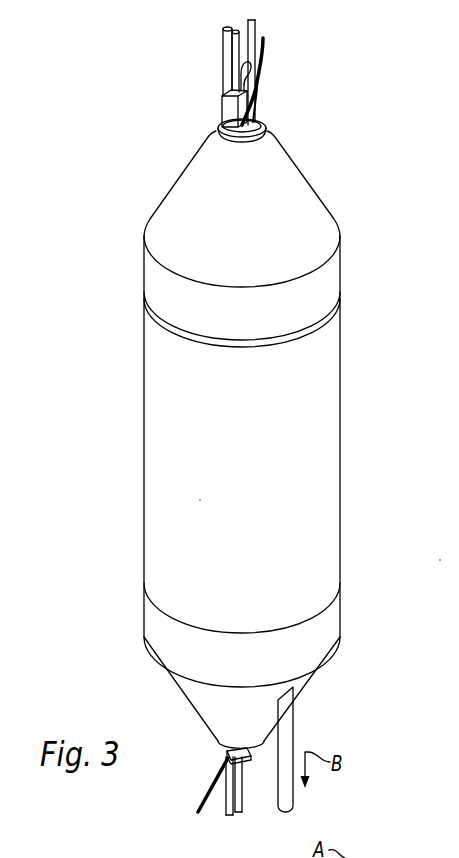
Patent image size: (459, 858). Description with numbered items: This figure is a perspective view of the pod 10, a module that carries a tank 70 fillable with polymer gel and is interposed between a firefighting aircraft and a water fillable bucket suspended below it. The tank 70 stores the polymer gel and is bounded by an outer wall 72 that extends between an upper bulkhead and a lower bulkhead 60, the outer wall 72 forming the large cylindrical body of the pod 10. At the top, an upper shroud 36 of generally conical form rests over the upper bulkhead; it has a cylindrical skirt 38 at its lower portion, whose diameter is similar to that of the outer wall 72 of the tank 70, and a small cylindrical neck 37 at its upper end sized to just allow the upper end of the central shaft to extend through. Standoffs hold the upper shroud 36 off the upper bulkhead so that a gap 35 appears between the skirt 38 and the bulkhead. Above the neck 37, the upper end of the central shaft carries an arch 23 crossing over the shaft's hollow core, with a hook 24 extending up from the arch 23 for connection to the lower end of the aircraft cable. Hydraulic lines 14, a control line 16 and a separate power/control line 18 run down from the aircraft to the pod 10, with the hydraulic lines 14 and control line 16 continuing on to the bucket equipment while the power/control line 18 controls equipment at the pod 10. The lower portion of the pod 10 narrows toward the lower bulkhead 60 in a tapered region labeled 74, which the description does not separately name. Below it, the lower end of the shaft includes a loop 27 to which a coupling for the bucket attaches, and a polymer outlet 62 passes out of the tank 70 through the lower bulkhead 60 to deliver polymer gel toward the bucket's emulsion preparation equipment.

The pod 10 is at (104, 398).
The hydraulic lines 14 is at (228, 30).
The control line 16 is at (264, 66).
The power/control line 18 is at (262, 37).
The arch 23 is at (226, 108).
The hook 24 is at (234, 64).
The loop 27 is at (224, 751).
The gap 35 is at (307, 330).
The upper shroud 36 is at (260, 233).
The cylindrical neck 37 is at (263, 129).
The cylindrical skirt 38 is at (325, 273).
The lower bulkhead 60 is at (449, 548).
The polymer outlet 62 is at (288, 723).
The tank 70 is at (330, 467).
The outer wall 72 is at (216, 541).
The lower conical portion 74 is at (193, 677).